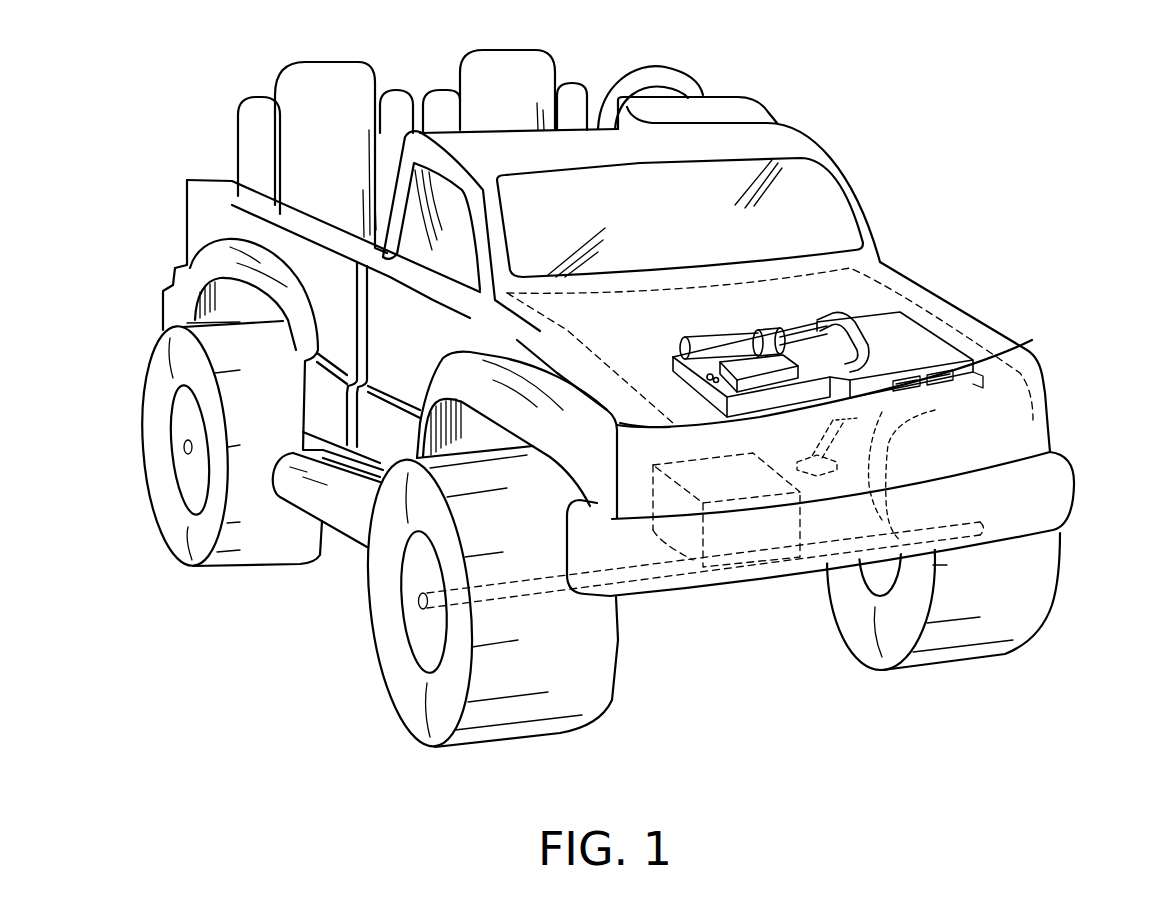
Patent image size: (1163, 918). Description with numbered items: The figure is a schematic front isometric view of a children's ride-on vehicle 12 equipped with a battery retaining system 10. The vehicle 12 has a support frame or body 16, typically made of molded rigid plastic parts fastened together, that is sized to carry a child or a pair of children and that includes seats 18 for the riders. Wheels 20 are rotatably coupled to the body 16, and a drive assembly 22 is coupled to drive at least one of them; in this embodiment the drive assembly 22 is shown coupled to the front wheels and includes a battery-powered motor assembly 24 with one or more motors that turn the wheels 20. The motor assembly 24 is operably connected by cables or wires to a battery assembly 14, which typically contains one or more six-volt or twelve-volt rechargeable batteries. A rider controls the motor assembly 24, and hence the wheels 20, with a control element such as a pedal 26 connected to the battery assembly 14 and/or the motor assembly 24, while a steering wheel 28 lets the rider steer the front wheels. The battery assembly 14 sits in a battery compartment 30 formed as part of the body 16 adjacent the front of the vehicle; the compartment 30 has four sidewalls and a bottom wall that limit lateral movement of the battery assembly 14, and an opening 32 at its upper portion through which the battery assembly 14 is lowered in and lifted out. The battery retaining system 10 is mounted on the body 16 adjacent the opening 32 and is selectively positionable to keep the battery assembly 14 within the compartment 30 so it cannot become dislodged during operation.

The battery retaining system 10 is at (886, 288).
The children's ride-on vehicle 12 is at (992, 93).
The battery assembly 14 is at (961, 330).
The body 16 is at (779, 119).
The seats 18 is at (457, 82).
The wheels 20 is at (172, 505).
The drive assembly 22 is at (775, 657).
The motor assembly 24 is at (735, 568).
The pedal 26 is at (897, 468).
The steering wheel 28 is at (662, 75).
The battery compartment 30 is at (967, 384).
The opening 32 is at (993, 371).